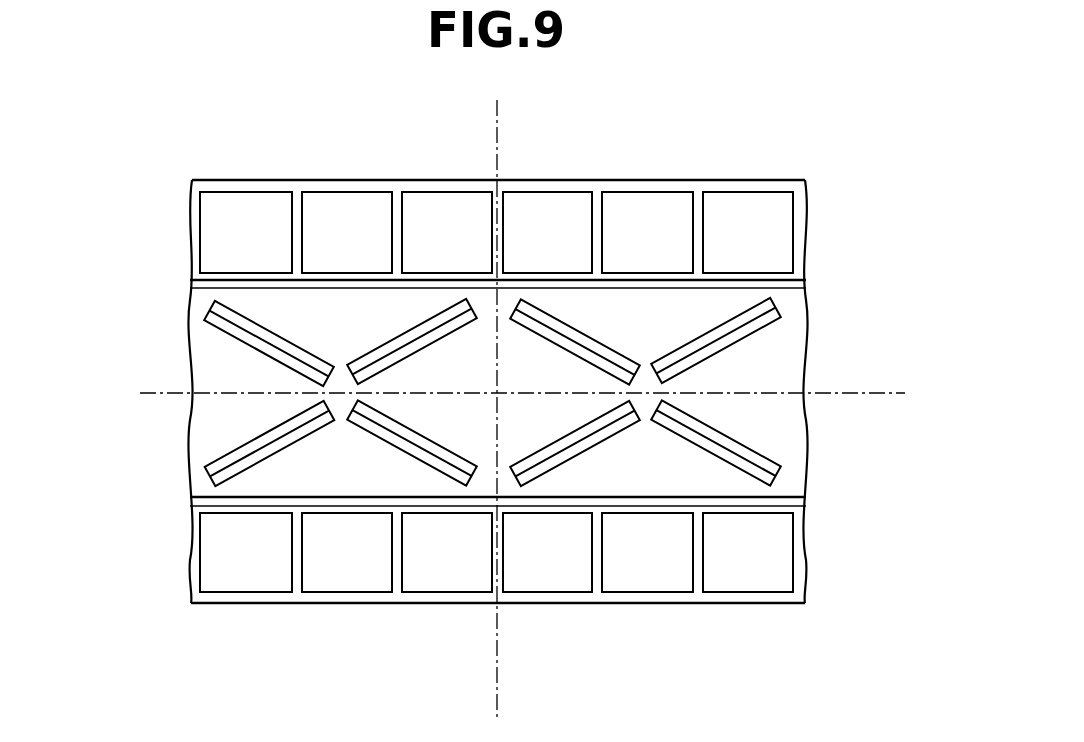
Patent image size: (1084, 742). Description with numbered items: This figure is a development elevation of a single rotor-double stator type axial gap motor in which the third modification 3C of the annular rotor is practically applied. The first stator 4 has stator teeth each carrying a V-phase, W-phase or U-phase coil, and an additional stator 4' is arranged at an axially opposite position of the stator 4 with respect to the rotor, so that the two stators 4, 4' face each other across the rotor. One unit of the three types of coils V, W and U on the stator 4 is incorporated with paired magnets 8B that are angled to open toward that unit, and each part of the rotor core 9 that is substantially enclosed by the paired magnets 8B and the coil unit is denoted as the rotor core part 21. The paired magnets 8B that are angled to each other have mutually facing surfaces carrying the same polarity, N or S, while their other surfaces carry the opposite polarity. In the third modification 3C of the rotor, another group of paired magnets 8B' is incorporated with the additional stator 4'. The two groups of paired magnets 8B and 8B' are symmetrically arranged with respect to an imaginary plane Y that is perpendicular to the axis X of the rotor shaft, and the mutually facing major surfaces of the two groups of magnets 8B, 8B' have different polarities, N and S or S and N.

The stator 4 is at (550, 560).
The additional stator 4' is at (549, 361).
The paired magnets 8B is at (496, 560).
The paired magnets 8B' is at (505, 228).
The third modification of annular rotor 3C is at (493, 304).
The rotor core 9 is at (491, 304).
The rotor core part 21 is at (308, 318).
The axis of rotor shaft X is at (497, 690).
The imaginary plane Y is at (862, 391).